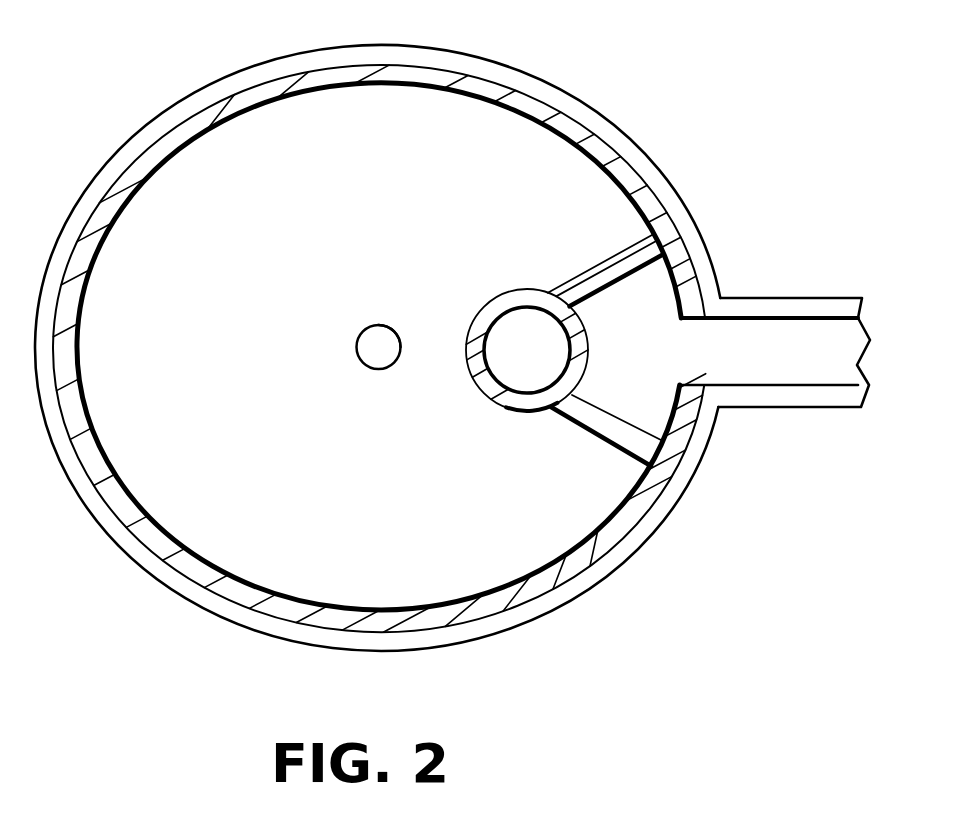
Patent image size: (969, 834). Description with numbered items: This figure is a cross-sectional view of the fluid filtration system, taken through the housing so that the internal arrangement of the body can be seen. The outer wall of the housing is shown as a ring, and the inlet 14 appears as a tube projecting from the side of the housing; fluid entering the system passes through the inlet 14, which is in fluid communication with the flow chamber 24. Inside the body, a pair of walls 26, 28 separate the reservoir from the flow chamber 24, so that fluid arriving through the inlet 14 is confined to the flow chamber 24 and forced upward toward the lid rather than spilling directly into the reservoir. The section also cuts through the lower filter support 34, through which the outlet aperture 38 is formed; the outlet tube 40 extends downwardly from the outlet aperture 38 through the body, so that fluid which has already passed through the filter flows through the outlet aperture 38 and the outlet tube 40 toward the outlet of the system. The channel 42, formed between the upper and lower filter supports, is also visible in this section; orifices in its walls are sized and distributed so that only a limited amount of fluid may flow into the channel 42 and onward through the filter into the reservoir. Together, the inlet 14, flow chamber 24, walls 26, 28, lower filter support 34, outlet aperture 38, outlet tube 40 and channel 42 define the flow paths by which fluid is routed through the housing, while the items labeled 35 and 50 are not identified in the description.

The inlet 14 is at (803, 343).
The flow chamber 24 is at (665, 297).
The wall 26 is at (605, 272).
The wall 28 is at (612, 450).
The lower filter support 34 is at (498, 137).
The interior chamber 35 is at (386, 160).
The outlet aperture 38 is at (502, 367).
The outlet tube 40 is at (525, 407).
The channel 42 is at (366, 349).
The rod surface 50 is at (394, 326).